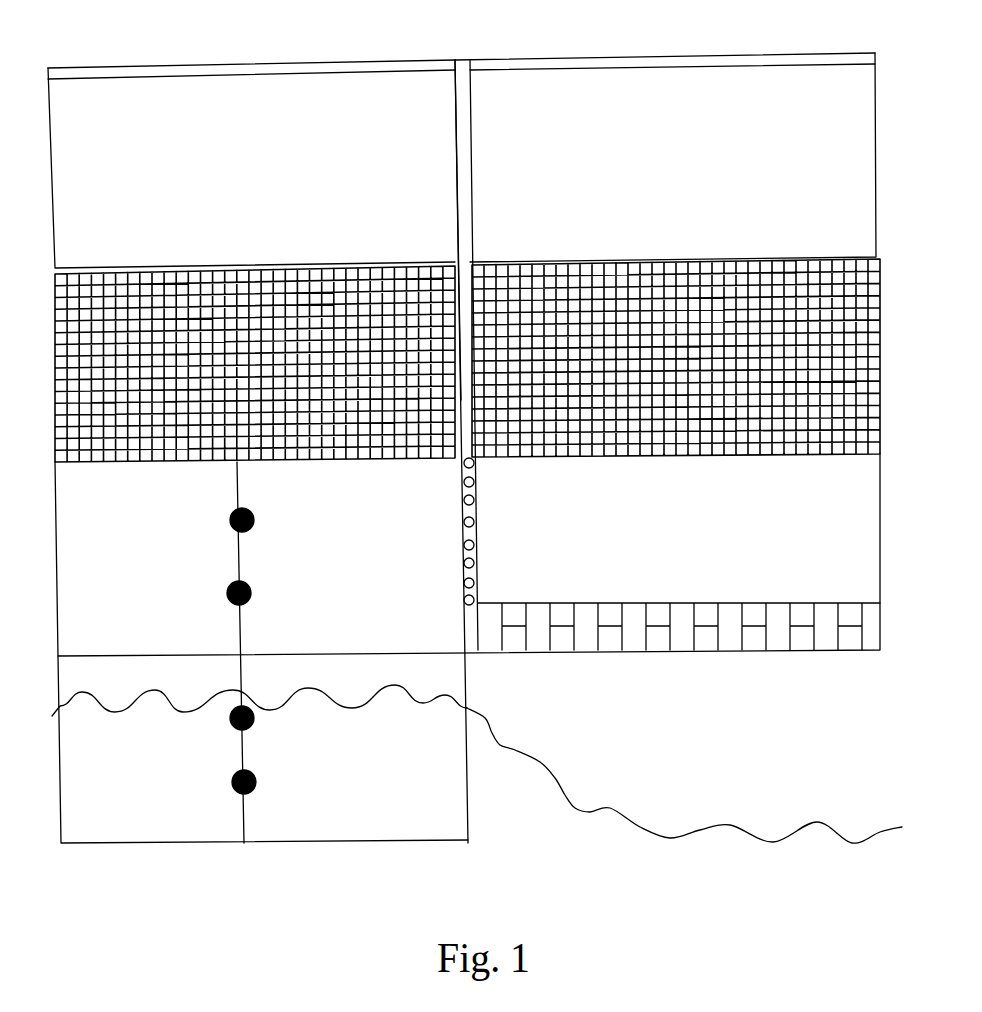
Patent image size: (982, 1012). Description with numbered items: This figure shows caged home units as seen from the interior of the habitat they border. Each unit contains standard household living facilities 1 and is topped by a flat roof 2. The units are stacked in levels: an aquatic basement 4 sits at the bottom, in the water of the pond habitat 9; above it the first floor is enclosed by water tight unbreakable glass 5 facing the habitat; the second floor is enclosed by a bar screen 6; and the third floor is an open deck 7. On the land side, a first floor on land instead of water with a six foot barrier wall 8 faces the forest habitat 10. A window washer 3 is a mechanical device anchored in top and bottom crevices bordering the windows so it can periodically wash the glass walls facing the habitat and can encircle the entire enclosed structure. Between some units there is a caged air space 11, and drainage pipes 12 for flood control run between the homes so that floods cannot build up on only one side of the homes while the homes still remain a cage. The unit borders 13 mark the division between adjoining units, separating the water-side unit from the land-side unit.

The standard household living facilities 1 is at (650, 225).
The flat roof 2 is at (652, 45).
The window washer 3 is at (232, 575).
The aquatic basement 4 is at (358, 685).
The first floor water tight unbreakable glass 5 is at (315, 583).
The second floor bar screen 6 is at (360, 473).
The third floor open deck 7 is at (310, 229).
The first floor on land instead of water with six foot barrier wall 8 is at (690, 562).
The pond habitat 9 is at (477, 908).
The forest habitat 10 is at (690, 762).
The caged air space between some units 11 is at (461, 160).
The drainage pipes for flood controls 12 is at (484, 556).
The unit borders 13 is at (452, 131).